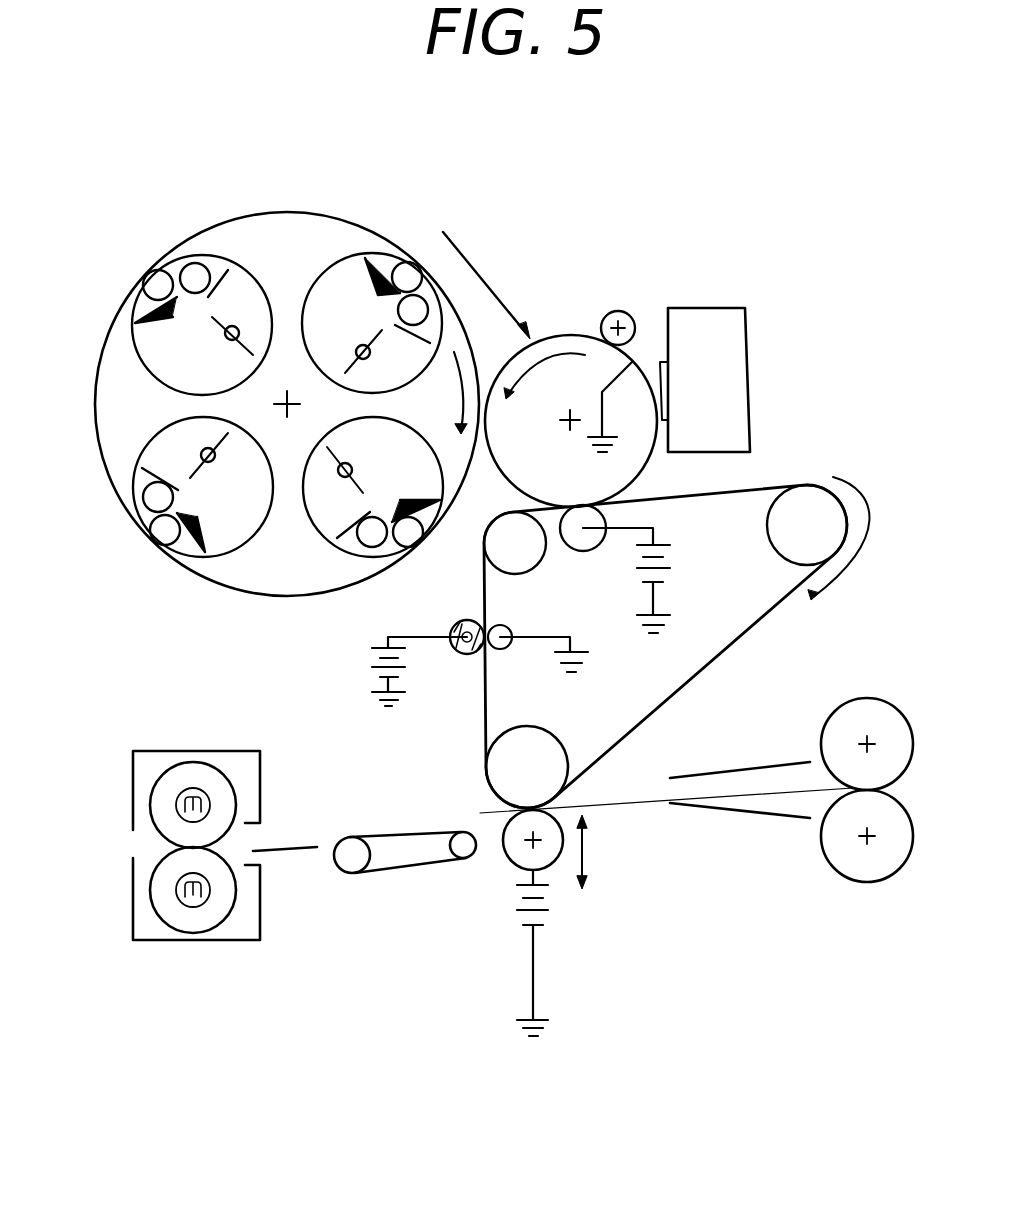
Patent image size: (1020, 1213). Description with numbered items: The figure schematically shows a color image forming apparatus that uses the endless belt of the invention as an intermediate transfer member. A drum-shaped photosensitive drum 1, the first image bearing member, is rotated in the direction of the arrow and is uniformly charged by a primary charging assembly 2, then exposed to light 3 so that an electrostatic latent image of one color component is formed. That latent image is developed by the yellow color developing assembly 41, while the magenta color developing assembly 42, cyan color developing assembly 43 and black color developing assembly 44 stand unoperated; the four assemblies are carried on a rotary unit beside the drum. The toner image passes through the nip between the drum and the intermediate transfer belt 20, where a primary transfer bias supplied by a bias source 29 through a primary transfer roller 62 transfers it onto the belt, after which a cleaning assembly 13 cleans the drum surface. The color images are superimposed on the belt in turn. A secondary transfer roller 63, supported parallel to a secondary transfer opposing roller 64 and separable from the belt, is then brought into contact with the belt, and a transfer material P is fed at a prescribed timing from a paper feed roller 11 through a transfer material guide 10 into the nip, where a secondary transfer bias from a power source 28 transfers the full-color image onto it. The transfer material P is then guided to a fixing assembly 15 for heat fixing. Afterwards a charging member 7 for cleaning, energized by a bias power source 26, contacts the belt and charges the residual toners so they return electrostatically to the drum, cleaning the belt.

The photosensitive drum 1 is at (560, 342).
The primary charging assembly 2 is at (627, 312).
The light 3 is at (480, 272).
The charging member for cleaning 7 is at (462, 655).
The transfer material guide 10 is at (760, 817).
The paper feed roller 11 is at (858, 703).
The cleaning assembly 13 is at (737, 367).
The fixing assembly 15 is at (133, 780).
The intermediate transfer belt 20 is at (763, 477).
The bias power source 26 is at (365, 658).
The power source 28 is at (553, 905).
The bias source 29 is at (675, 557).
The yellow color developing assembly 41 is at (373, 250).
The magenta color developing assembly 42 is at (213, 250).
The cyan color developing assembly 43 is at (183, 558).
The black color developing assembly 44 is at (312, 523).
The primary transfer roller 62 is at (580, 543).
The secondary transfer roller 63 is at (510, 852).
The secondary transfer opposing roller 64 is at (557, 755).
The transfer material P is at (633, 800).